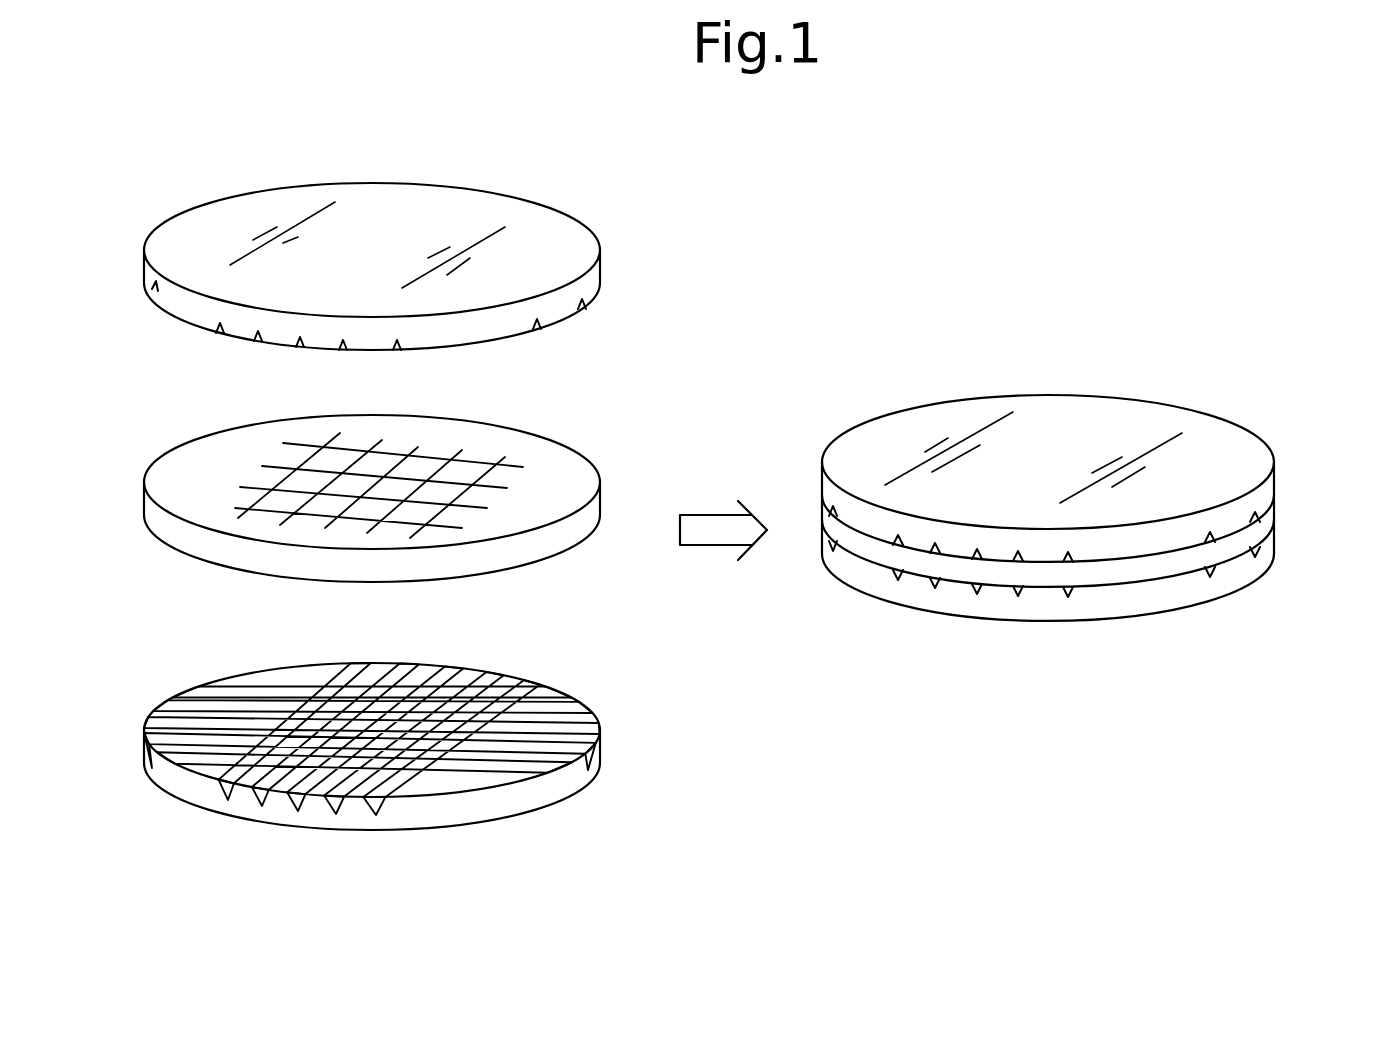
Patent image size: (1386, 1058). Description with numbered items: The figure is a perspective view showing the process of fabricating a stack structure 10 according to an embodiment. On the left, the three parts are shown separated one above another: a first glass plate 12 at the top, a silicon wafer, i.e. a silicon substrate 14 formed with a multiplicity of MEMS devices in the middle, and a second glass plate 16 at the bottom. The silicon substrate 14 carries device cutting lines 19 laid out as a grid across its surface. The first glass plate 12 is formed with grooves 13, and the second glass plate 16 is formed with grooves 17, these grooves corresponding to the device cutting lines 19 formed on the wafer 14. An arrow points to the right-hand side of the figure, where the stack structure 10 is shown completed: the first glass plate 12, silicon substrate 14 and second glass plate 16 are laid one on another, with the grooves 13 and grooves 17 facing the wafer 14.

The stack structure 10 is at (1208, 386).
The first glass plate 12 is at (375, 269).
The grooves 13 is at (258, 333).
The silicon substrate 14 is at (375, 485).
The second glass plate 16 is at (388, 779).
The grooves 17 is at (407, 792).
The device cutting lines 19 is at (290, 490).